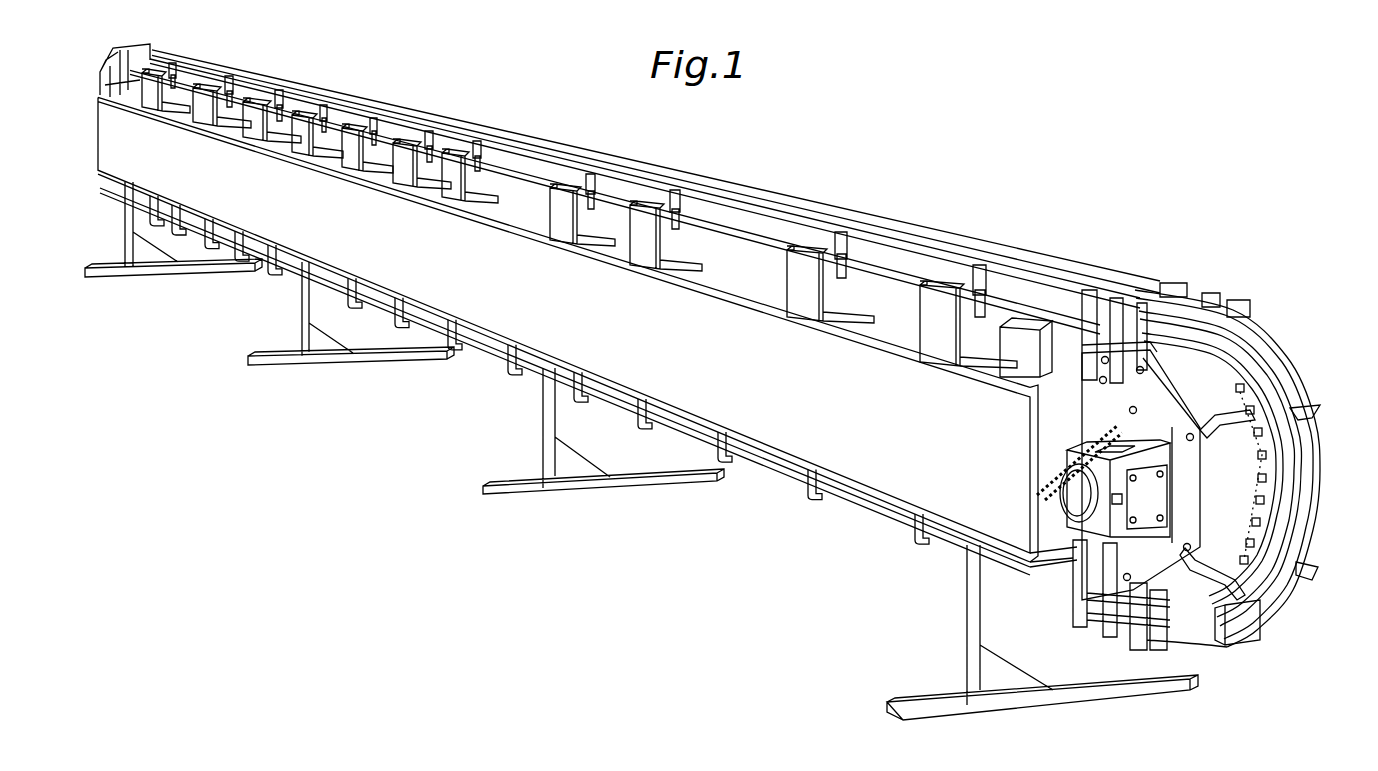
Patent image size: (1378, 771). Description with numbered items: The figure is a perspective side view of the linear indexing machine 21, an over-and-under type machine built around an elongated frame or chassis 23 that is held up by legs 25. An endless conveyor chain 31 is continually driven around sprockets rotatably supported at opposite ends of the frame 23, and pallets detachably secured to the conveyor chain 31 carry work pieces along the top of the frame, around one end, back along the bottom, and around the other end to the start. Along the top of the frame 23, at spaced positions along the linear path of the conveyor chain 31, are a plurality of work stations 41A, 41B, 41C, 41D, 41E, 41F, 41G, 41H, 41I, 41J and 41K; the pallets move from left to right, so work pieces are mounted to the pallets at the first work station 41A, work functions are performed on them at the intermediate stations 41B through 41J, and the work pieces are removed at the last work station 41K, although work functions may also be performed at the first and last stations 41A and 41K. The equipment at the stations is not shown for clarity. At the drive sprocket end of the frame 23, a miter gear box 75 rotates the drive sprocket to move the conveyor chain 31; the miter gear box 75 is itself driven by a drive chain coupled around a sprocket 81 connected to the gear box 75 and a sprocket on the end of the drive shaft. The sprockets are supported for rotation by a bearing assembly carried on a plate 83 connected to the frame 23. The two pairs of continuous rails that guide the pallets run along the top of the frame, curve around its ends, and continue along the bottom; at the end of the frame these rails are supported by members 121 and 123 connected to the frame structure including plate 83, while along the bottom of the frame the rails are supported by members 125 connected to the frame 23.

The linear indexing machine 21 is at (755, 152).
The elongated frame 23 is at (915, 487).
The legs 25 is at (518, 498).
The endless conveyor chain 31 is at (1263, 449).
The first work station 41A is at (157, 98).
The work station 41B is at (207, 113).
The work station 41C is at (256, 132).
The work station 41D is at (302, 148).
The work station 41E is at (352, 163).
The work station 41F is at (405, 188).
The work station 41G is at (455, 192).
The work station 41H is at (565, 227).
The work station 41I is at (648, 252).
The work station 41J is at (803, 290).
The last work station 41K is at (940, 337).
The miter gear box 75 is at (1072, 560).
The sprocket 81 is at (1050, 500).
The plate 83 is at (1163, 413).
The rail supporting member 121 is at (1250, 620).
The rail supporting member 123 is at (1303, 568).
The rail supporting members 125 is at (740, 470).